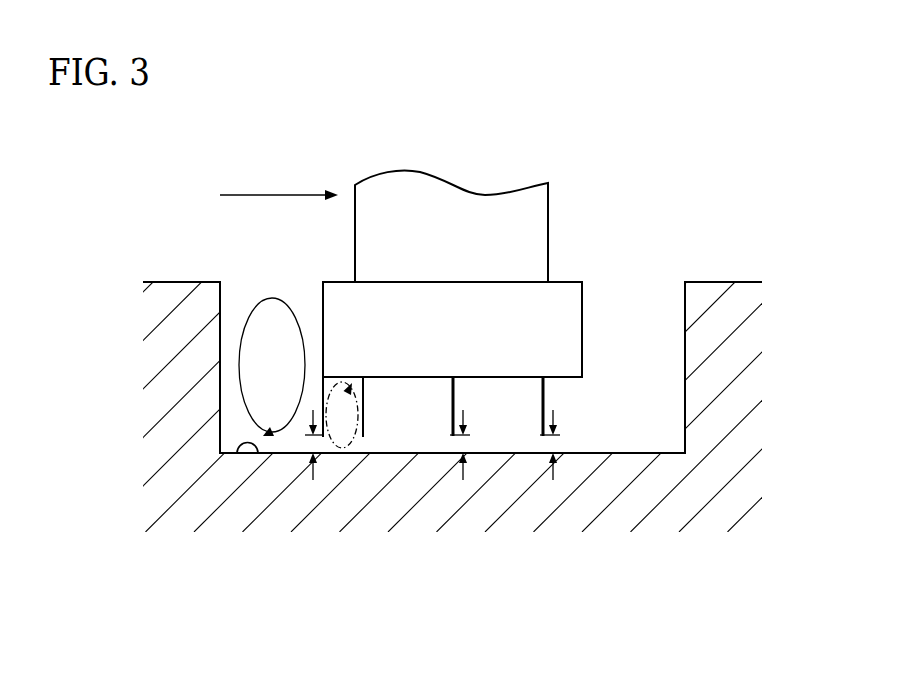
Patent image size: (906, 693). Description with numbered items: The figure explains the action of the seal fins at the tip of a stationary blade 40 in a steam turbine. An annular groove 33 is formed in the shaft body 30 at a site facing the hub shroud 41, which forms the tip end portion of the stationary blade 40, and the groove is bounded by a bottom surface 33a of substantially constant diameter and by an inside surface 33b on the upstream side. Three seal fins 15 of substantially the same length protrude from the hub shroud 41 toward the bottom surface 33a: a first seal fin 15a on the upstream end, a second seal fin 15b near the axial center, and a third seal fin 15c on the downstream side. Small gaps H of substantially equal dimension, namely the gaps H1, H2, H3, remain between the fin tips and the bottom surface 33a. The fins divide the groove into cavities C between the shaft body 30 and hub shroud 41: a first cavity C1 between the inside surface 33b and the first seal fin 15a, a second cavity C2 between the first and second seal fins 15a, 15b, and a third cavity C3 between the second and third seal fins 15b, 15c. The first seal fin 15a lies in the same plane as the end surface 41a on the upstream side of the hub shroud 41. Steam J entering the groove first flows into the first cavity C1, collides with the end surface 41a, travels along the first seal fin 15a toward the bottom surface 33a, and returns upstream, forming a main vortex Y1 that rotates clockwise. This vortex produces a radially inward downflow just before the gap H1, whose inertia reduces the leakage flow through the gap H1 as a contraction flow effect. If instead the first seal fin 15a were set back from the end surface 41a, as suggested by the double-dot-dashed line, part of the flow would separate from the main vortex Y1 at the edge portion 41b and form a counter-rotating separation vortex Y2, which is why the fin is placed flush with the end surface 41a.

The shaft body 30 is at (742, 282).
The annular groove 33 is at (685, 333).
The bottom surface of the annular groove 33a is at (237, 456).
The inside surface on the upstream side of the annular groove 33b is at (222, 297).
The stationary blade 40 is at (548, 220).
The hub shroud 41 is at (373, 279).
The end surface on the upstream side of the hub shroud 41a is at (322, 297).
The edge portion 41b is at (323, 378).
The steam J is at (273, 195).
The seal fins 15 is at (437, 474).
The first seal fin 15a is at (366, 388).
The second seal fin 15b is at (452, 440).
The third seal fin 15c is at (545, 440).
The small gaps H is at (463, 499).
The small gap H1 is at (320, 474).
The small gap H2 is at (466, 460).
The small gap H3 is at (556, 460).
The main vortex Y1 is at (237, 368).
The separation vortex Y2 is at (348, 448).
The cavities C is at (311, 352).
The first cavity C1 is at (233, 325).
The second cavity C2 is at (410, 398).
The third cavity C3 is at (496, 405).